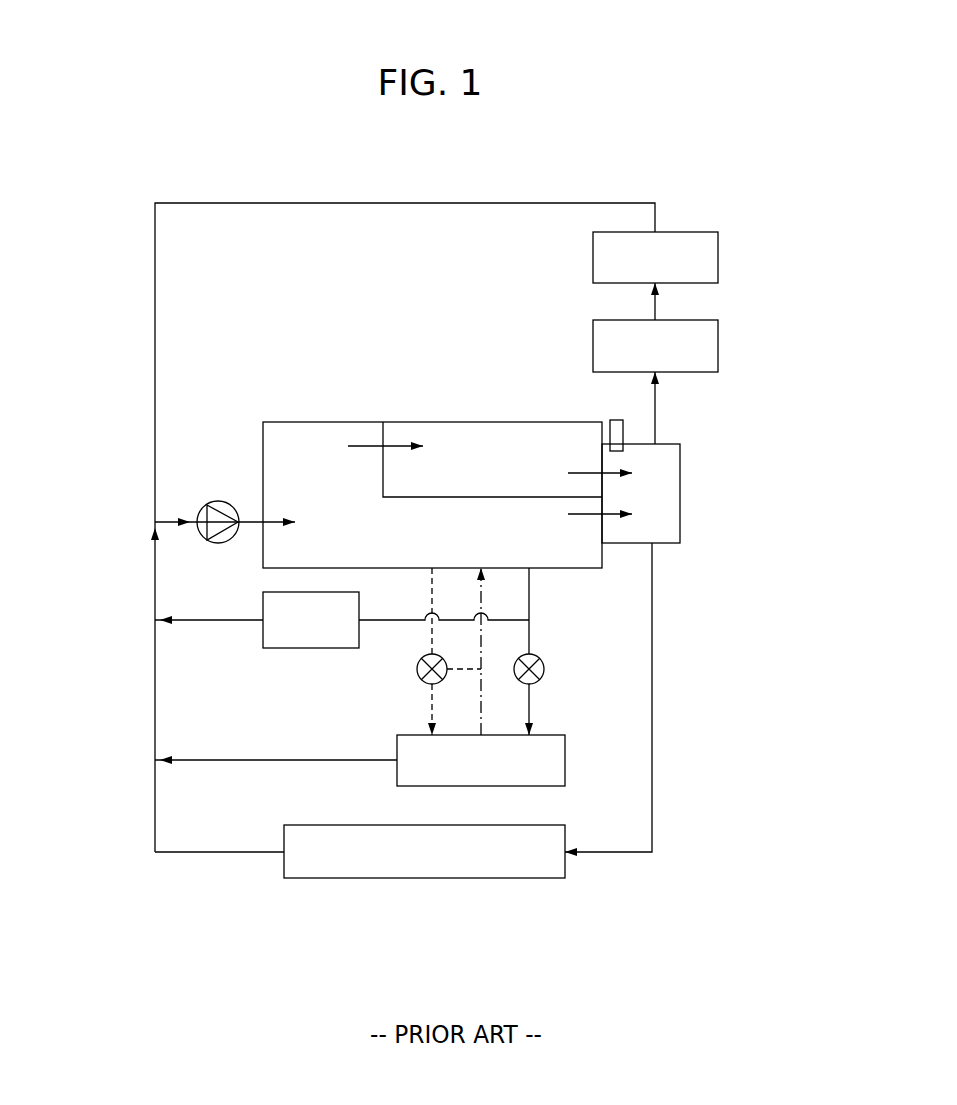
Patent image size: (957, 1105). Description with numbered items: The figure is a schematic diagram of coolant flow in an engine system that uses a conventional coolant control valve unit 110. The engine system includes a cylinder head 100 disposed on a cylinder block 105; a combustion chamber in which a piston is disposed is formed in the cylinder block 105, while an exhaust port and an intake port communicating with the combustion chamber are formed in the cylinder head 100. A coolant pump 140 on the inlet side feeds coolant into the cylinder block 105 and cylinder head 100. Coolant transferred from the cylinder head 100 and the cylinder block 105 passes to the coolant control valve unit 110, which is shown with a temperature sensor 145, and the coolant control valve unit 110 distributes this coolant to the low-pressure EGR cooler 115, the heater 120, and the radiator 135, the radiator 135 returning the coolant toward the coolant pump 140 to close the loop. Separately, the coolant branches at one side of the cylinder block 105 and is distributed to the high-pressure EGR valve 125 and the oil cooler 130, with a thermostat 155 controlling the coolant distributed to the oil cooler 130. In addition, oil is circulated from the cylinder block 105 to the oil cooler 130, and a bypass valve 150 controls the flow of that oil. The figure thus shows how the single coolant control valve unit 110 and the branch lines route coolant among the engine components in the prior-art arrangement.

The cylinder head 100 is at (460, 452).
The cylinder block 105 is at (306, 452).
The coolant control valve unit 110 is at (680, 514).
The low-pressure EGR cooler 115 is at (718, 347).
The heater 120 is at (718, 258).
The high-pressure EGR valve 125 is at (278, 650).
The oil cooler 130 is at (565, 760).
The radiator 135 is at (511, 880).
The coolant pump 140 is at (216, 500).
The temperature sensor 145 is at (610, 420).
The bypass valve 150 is at (418, 676).
The thermostat 155 is at (545, 669).